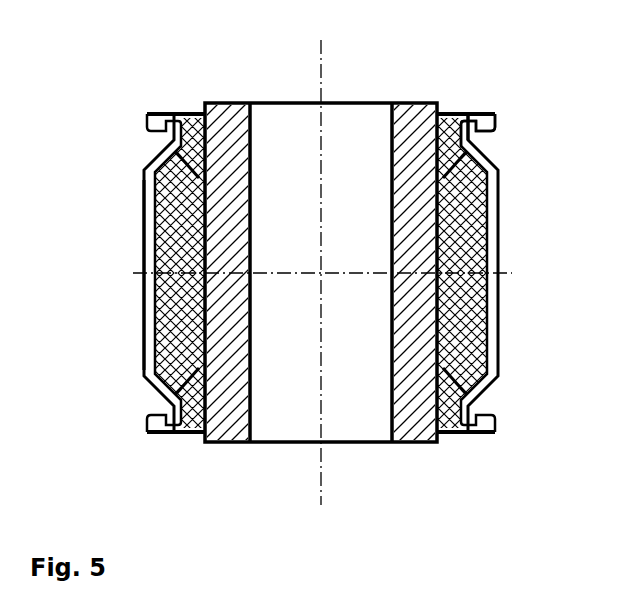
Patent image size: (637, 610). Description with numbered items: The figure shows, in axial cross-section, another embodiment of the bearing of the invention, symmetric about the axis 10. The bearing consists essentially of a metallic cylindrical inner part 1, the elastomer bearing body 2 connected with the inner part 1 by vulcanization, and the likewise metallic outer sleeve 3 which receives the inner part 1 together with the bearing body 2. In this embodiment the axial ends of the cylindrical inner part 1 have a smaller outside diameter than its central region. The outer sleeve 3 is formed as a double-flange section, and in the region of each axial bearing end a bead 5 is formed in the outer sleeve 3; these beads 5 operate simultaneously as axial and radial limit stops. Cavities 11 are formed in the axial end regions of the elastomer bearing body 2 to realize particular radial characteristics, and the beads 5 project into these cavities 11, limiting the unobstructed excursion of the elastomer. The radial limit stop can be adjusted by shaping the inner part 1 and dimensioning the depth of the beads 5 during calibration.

The cylindrical inner part 1 is at (232, 143).
The elastomer bearing body 2 is at (472, 311).
The outer sleeve 3 is at (143, 349).
The bead 5 is at (490, 137).
The longitudinal axis 10 is at (321, 92).
The cavity 11 is at (452, 126).